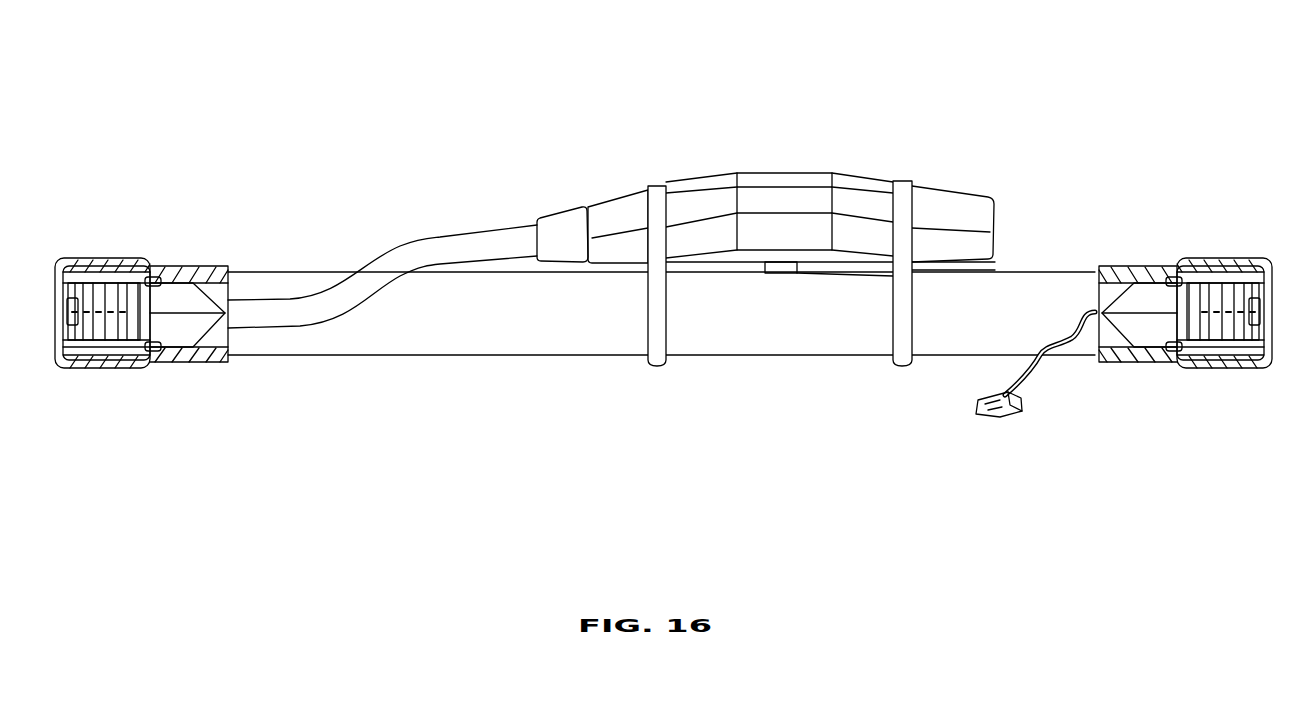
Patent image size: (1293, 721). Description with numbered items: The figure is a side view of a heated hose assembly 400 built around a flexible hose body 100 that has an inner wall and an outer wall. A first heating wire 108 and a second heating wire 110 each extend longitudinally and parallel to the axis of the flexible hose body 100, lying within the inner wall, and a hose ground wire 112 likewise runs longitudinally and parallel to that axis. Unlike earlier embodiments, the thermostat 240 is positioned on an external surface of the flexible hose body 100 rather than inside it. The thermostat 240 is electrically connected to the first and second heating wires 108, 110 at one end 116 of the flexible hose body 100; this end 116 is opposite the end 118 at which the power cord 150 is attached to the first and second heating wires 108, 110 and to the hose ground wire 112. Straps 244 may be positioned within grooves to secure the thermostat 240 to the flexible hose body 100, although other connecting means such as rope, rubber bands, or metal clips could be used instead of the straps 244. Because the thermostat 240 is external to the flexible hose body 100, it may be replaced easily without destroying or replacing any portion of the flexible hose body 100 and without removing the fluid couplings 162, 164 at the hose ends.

The heated hose assembly 400 is at (312, 128).
The flexible hose body 100 is at (516, 332).
The thermostat 240 is at (797, 241).
The straps 244 is at (655, 190).
The end 116 is at (132, 404).
The end 118 is at (1185, 394).
The first heating wire 108 is at (152, 278).
The second heating wire 110 is at (152, 350).
The hose ground wire 112 is at (105, 305).
The fluid coupling 162 is at (95, 330).
The fluid coupling 164 is at (1218, 335).
The power cord 150 is at (1012, 417).